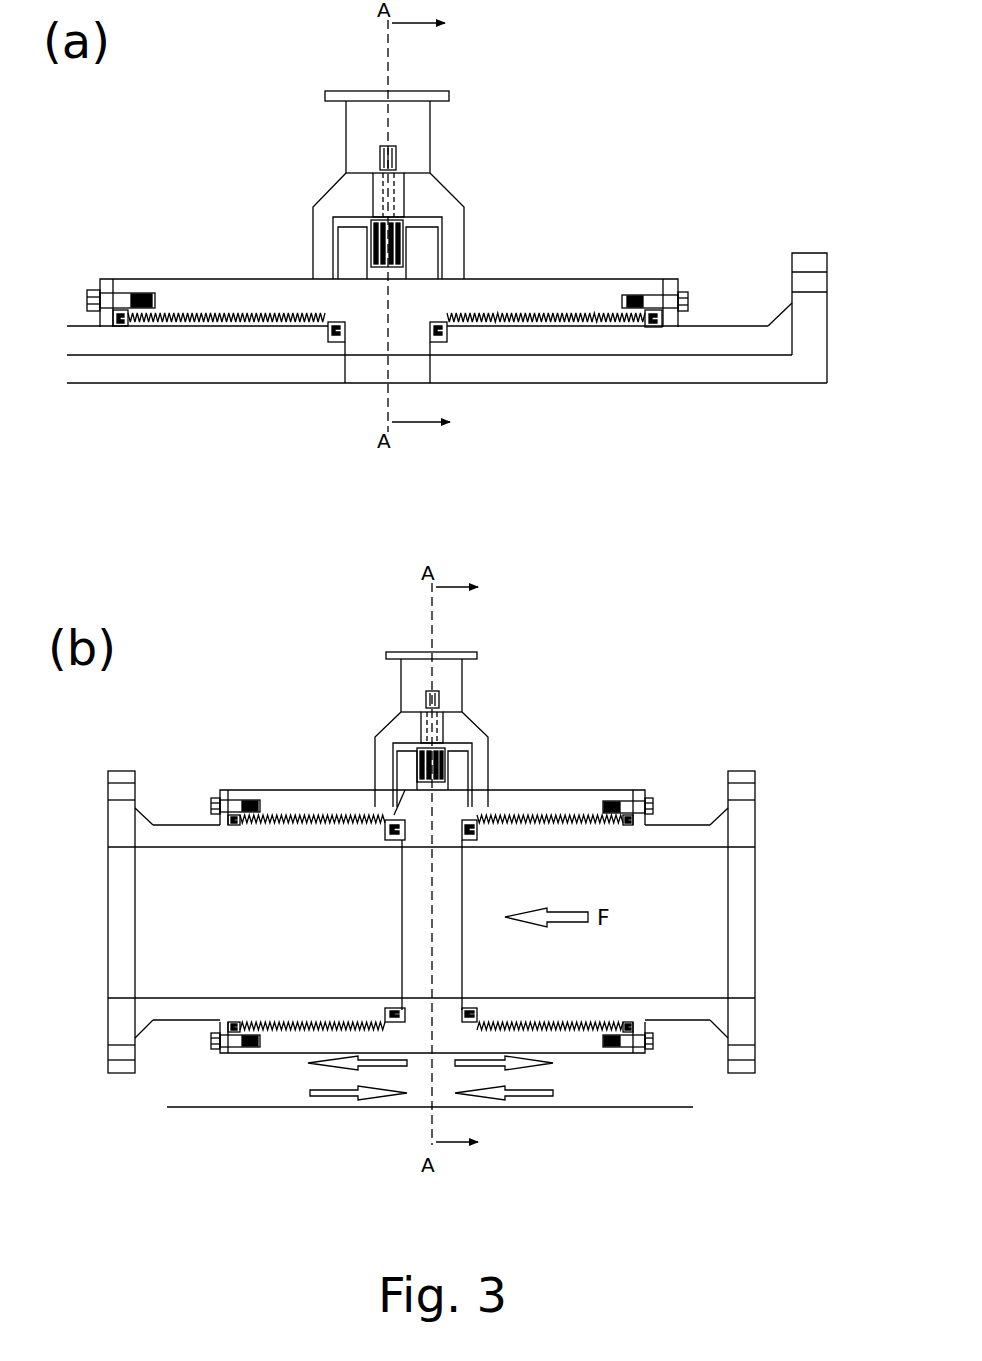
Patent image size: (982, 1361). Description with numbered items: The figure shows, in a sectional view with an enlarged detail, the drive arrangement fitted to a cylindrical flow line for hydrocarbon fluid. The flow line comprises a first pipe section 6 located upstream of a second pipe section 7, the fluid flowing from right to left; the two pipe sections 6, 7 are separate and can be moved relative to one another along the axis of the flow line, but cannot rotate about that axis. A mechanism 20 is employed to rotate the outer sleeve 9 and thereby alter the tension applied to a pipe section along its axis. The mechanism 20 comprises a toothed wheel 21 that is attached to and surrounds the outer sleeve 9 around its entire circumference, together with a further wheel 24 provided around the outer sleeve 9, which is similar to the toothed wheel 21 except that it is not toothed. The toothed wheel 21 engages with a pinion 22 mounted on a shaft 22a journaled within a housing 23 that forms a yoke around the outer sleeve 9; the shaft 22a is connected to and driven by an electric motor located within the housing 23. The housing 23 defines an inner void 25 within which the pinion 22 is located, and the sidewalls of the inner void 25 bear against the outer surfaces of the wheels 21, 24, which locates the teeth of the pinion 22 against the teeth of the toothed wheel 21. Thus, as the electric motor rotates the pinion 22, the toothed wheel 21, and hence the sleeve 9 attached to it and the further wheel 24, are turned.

The first pipe section 6 is at (610, 345).
The second pipe section 7 is at (213, 344).
The outer sleeve 9 is at (572, 290).
The mechanism 20 is at (492, 159).
The toothed wheel 21 is at (427, 255).
The pinion 22 is at (387, 243).
The shaft 22a is at (392, 190).
The housing 23 is at (348, 195).
The further wheel 24 is at (352, 263).
The inner void 25 is at (428, 218).